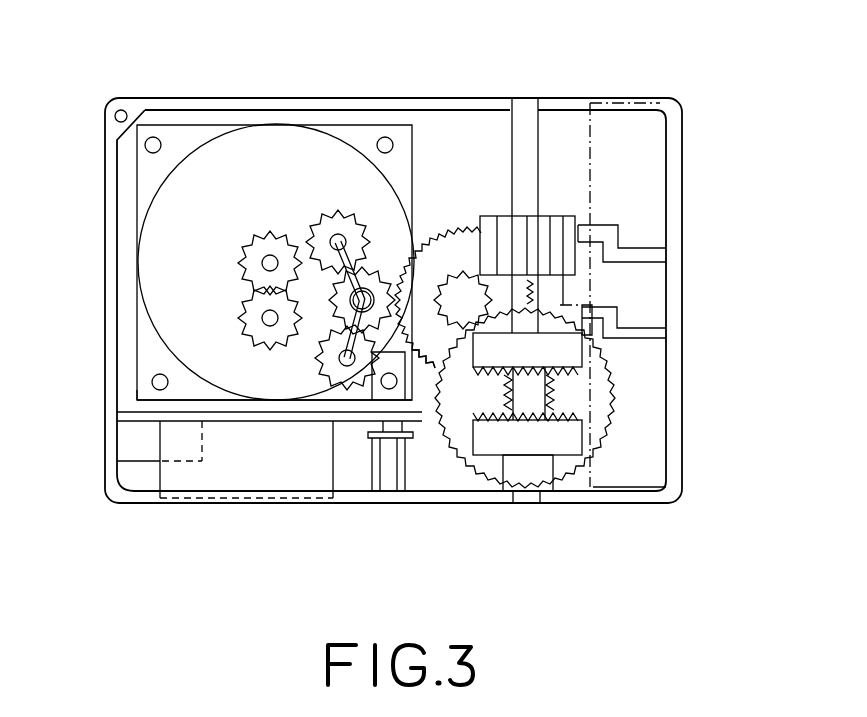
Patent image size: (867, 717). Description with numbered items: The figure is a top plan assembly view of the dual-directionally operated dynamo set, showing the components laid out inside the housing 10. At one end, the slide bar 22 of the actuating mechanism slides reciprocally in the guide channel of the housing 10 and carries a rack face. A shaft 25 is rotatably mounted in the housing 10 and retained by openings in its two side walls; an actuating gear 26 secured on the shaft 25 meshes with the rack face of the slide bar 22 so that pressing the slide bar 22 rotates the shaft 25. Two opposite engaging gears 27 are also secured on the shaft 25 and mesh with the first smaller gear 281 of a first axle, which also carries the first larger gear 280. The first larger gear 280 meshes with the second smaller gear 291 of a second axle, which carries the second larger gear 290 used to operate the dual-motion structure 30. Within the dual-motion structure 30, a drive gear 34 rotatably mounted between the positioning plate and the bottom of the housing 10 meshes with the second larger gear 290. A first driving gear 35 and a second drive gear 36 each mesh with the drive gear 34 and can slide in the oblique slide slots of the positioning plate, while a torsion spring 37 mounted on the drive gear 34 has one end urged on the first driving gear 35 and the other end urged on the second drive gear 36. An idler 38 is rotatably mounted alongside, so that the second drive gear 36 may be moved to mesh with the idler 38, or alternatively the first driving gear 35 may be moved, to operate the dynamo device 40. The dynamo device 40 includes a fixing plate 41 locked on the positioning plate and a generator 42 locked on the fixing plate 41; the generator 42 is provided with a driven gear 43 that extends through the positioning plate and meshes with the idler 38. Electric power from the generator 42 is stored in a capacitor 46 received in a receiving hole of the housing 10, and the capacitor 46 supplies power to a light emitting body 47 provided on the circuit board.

The housing 10 is at (125, 495).
The slide bar 22 is at (650, 278).
The shaft 25 is at (530, 160).
The actuating gear 26 is at (558, 222).
The engaging gears 27 is at (578, 447).
The first larger gear 280 is at (612, 420).
The first smaller gear 281 is at (558, 395).
The second larger gear 290 is at (427, 357).
The second smaller gear 291 is at (453, 325).
The dual-motion structure 30 is at (294, 392).
The drive gear 34 is at (416, 235).
The first driving gear 35 is at (356, 212).
The second drive gear 36 is at (348, 380).
The torsion spring 37 is at (385, 245).
The idler 38 is at (255, 340).
The dynamo device 40 is at (171, 98).
The fixing plate 41 is at (143, 178).
The generator 42 is at (258, 150).
The driven gear 43 is at (290, 215).
The capacitor 46 is at (222, 498).
The light emitting body 47 is at (387, 477).